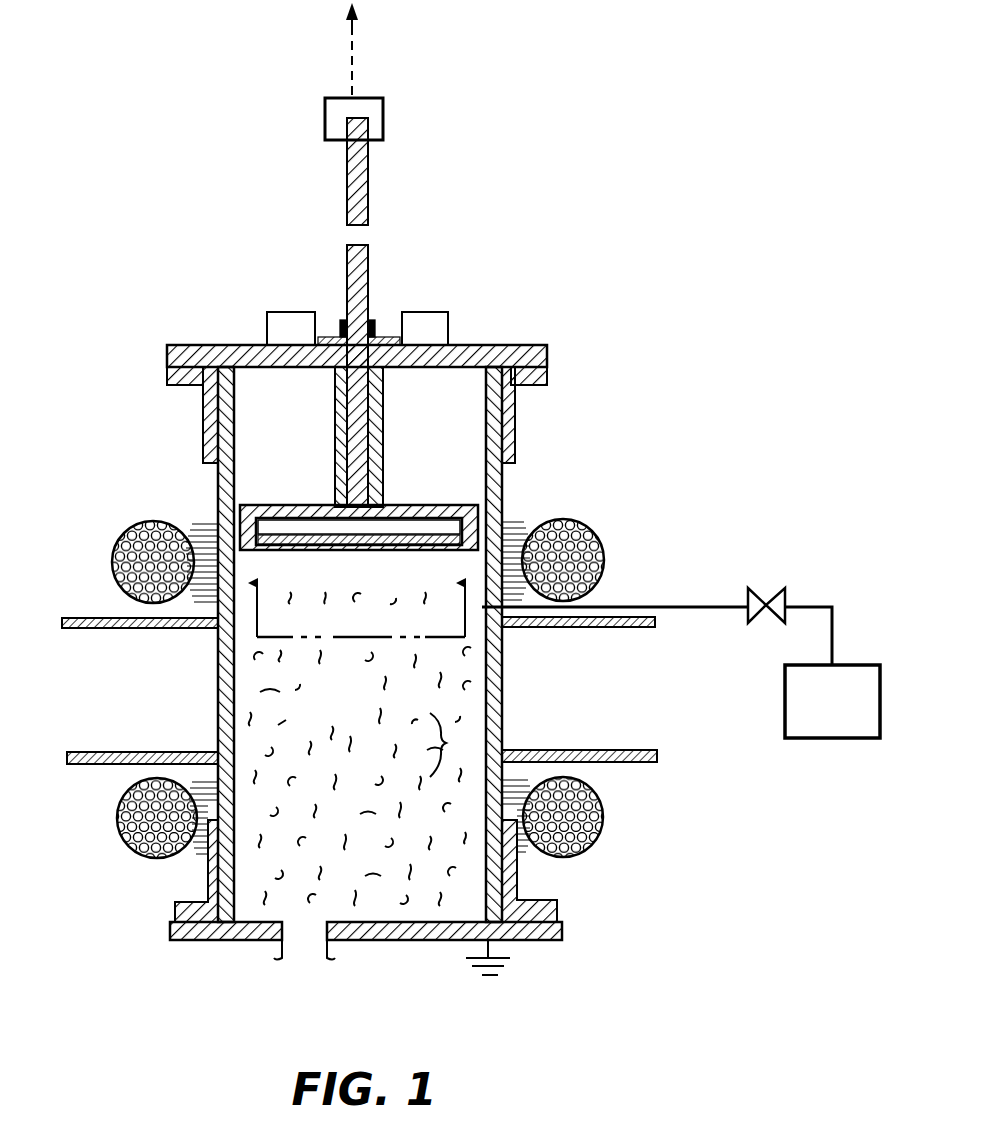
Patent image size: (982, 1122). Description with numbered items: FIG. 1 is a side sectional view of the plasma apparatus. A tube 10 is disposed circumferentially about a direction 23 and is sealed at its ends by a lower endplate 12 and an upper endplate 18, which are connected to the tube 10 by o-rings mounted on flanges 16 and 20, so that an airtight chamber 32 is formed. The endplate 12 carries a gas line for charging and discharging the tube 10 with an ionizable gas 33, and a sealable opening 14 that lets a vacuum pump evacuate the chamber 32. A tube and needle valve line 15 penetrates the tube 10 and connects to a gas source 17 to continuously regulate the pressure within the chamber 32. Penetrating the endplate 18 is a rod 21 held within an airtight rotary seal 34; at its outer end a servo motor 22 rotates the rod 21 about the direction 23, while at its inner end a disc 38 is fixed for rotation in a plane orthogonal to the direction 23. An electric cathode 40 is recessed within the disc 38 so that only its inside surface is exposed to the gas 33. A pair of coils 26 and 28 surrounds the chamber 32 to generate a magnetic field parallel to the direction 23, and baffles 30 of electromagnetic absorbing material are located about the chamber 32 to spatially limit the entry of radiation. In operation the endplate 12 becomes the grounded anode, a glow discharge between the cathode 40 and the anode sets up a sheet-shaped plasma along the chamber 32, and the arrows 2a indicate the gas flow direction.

The tube 10 is at (218, 491).
The endplate 12 is at (218, 942).
The sealable opening 14 is at (308, 944).
The tube and needle valve line 15 is at (699, 607).
The flange 16 is at (208, 879).
The gas source 17 is at (852, 714).
The endplate 18 is at (212, 350).
The flange 20 is at (203, 418).
The rod 21 is at (368, 165).
The servo motor 22 is at (384, 110).
The direction 23 is at (352, 44).
The coil 26 is at (114, 564).
The coil 28 is at (126, 820).
The baffle 30 is at (138, 629).
The airtight chamber 32 is at (363, 722).
The ionizable gas 33 is at (446, 743).
The airtight rotary seal 34 is at (378, 340).
The disc 38 is at (434, 510).
The electric cathode 40 is at (327, 522).
The gas flow direction 2a is at (361, 599).